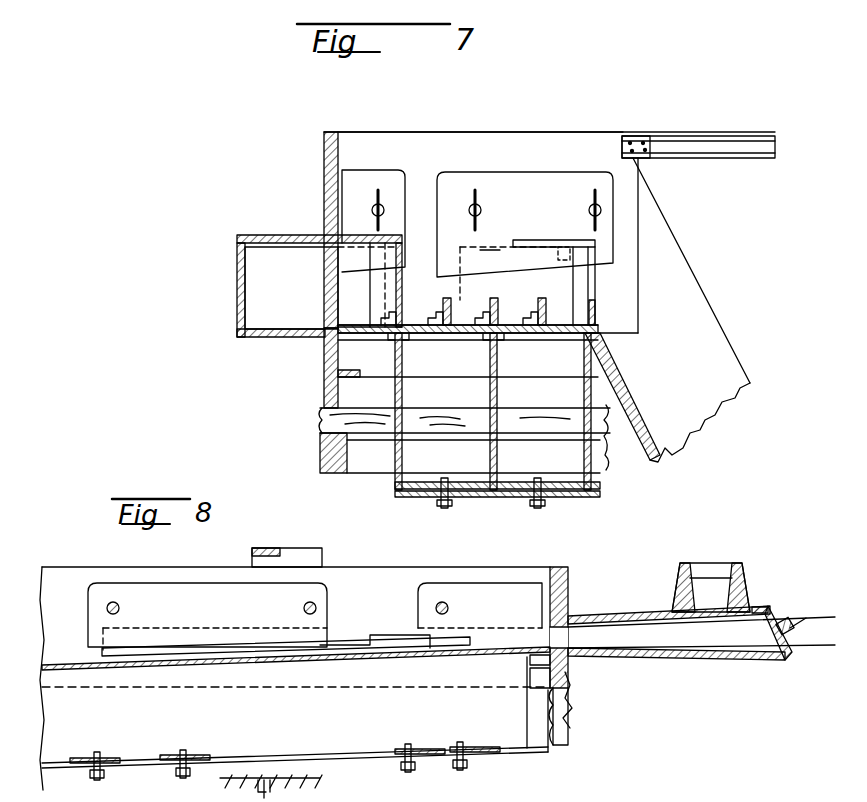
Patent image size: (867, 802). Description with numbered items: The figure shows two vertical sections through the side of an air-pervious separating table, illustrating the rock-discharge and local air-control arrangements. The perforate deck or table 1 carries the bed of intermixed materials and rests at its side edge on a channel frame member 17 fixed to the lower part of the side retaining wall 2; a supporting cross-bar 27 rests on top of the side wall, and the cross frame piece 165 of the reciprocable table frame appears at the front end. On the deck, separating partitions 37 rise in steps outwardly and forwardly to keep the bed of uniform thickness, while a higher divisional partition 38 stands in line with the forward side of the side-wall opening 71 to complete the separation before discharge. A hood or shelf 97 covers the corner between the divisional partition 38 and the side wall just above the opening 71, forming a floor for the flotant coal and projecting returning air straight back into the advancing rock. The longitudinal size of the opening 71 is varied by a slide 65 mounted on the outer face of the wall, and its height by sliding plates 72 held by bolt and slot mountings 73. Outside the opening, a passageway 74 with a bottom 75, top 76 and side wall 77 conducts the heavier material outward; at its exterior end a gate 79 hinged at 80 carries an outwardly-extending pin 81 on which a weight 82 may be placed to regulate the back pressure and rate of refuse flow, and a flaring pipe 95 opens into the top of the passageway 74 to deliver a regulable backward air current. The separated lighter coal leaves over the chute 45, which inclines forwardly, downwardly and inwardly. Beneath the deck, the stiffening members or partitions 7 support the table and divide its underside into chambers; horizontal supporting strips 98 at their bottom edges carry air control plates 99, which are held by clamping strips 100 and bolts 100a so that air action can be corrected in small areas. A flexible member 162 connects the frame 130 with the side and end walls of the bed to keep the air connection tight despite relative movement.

In FIG. 7, the air pervious deck or table 1 is at (428, 322).
In FIG. 8, the air pervious deck or table 1 is at (296, 667).
In FIG. 7, the side retaining wall 2 is at (323, 156).
In FIG. 8, the side retaining wall 2 is at (165, 568).
In FIG. 7, the stiffening members or partitions 7 is at (403, 392).
In FIG. 8, the stiffening members or partitions 7 is at (140, 742).
In FIG. 7, the channel frame members 17 is at (333, 356).
In FIG. 8, the channel frame members 17 is at (550, 735).
In FIG. 8, the supporting cross-bar 27 is at (252, 558).
In FIG. 7, the separating partitions 37 is at (528, 300).
In FIG. 8, the separating partitions 37 is at (380, 636).
In FIG. 7, the divisional partitions 38 is at (598, 312).
In FIG. 7, the chute 45 is at (650, 386).
In FIG. 7, the slides 65 is at (490, 292).
In FIG. 8, the slides 65 is at (135, 652).
In FIG. 7, the opening 71 is at (350, 278).
In FIG. 8, the opening 71 is at (560, 632).
In FIG. 7, the sliding plates 72 is at (375, 172).
In FIG. 8, the sliding plates 72 is at (90, 615).
In FIG. 7, the bolt and slot mountings 73 is at (372, 210).
In FIG. 8, the bolt and slot mountings 73 is at (122, 600).
In FIG. 7, the passageways 74 is at (258, 262).
In FIG. 8, the passageways 74 is at (600, 645).
In FIG. 7, the bottoms 75 is at (268, 338).
In FIG. 8, the bottoms 75 is at (655, 655).
In FIG. 7, the tops 76 is at (275, 236).
In FIG. 8, the tops 76 is at (648, 605).
In FIG. 7, the side wall 77 is at (238, 323).
In FIG. 8, the side wall 77 is at (705, 655).
In FIG. 8, the gates 79 is at (795, 657).
In FIG. 8, the hinge 80 is at (766, 608).
In FIG. 8, the outwardly-extending pins 81 is at (803, 617).
In FIG. 8, the weights 82 is at (785, 620).
In FIG. 8, the flaring pipe 95 is at (712, 590).
In FIG. 7, the hood or shelf 97 is at (547, 240).
In FIG. 7, the horizontal supporting strips 98 is at (402, 494).
In FIG. 8, the horizontal supporting strips 98 is at (255, 760).
In FIG. 7, the air control plates 99 is at (462, 482).
In FIG. 8, the air control plates 99 is at (88, 758).
In FIG. 7, the clamping strips 100 is at (437, 500).
In FIG. 8, the clamping strips 100 is at (92, 772).
In FIG. 7, the bolts 100a is at (445, 508).
In FIG. 8, the bolts 100a is at (183, 752).
In FIG. 7, the frame 130 is at (320, 457).
In FIG. 7, the flexible member 162 is at (318, 418).
In FIG. 8, the flexible member 162 is at (566, 718).
In FIG. 7, the cross frame piece 165 is at (710, 136).